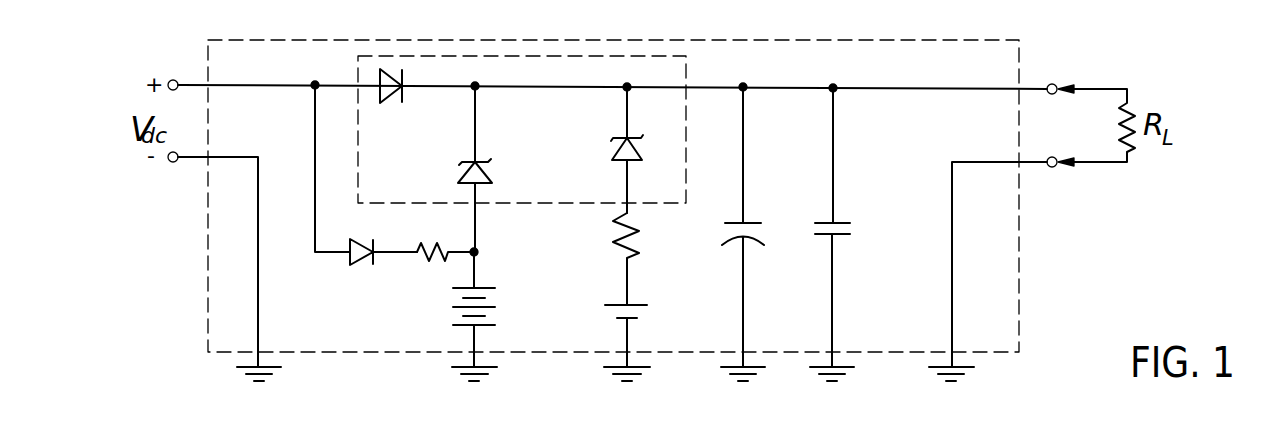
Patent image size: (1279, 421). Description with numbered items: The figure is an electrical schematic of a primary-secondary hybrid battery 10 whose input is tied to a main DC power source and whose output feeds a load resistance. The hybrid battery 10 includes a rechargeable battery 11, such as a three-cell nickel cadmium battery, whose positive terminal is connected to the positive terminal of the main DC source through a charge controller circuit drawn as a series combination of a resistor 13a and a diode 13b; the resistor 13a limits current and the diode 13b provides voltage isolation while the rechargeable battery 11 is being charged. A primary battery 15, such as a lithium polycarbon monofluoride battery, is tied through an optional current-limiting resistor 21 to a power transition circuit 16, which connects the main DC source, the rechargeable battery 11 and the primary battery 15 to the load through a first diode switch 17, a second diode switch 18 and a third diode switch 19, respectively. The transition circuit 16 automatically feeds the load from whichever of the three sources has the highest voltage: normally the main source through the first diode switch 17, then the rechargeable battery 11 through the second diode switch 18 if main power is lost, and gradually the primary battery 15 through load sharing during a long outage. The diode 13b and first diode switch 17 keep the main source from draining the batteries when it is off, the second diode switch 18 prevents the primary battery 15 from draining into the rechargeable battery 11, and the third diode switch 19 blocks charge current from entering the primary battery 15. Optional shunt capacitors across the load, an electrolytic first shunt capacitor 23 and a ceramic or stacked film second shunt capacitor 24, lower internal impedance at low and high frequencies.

The primary-secondary hybrid battery 10 is at (1098, 61).
The rechargeable battery 11 is at (484, 327).
The resistor 13a is at (420, 268).
The diode 13b is at (356, 268).
The primary battery 15 is at (637, 319).
The power transition circuit 16 is at (687, 63).
The first diode switch 17 is at (388, 98).
The second diode switch 18 is at (491, 176).
The third diode switch 19 is at (611, 150).
The current-limiting resistor 21 is at (640, 236).
The first shunt capacitor 23 is at (760, 240).
The second shunt capacitor 24 is at (841, 237).